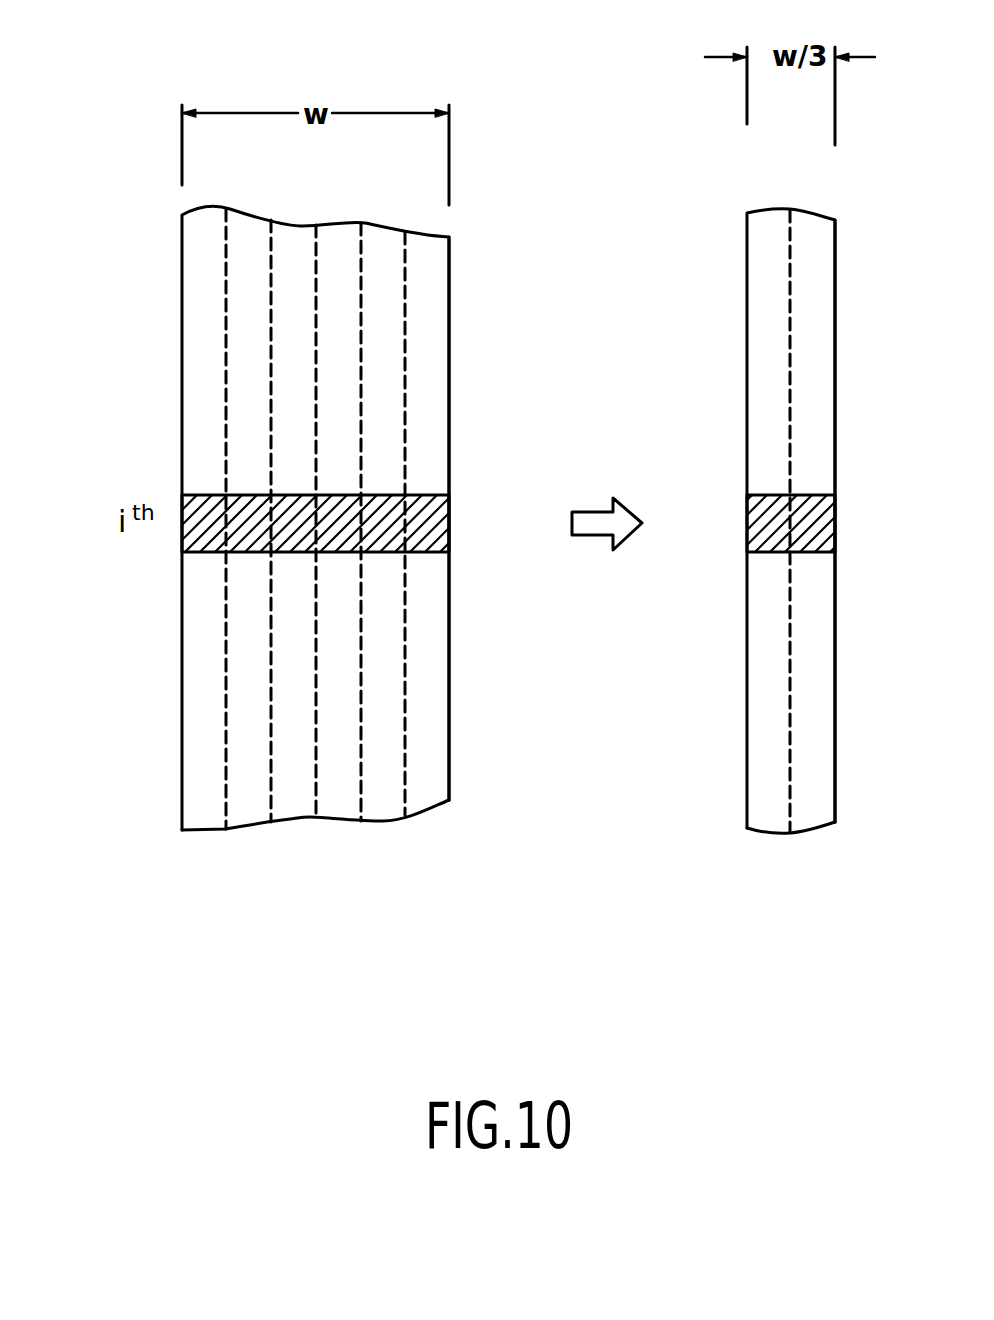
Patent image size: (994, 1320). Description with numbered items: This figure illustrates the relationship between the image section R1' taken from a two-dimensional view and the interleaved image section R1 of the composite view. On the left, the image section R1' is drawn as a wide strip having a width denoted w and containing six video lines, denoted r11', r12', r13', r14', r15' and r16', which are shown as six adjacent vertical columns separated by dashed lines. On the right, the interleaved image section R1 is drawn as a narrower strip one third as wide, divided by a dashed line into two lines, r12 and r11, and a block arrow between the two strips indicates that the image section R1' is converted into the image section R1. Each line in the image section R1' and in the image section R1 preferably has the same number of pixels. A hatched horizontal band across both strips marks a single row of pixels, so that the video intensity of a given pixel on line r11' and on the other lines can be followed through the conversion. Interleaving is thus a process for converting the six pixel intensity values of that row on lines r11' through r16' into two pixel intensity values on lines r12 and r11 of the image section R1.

The image section R1' is at (274, 518).
The video line r11' is at (154, 564).
The video line r12' is at (228, 601).
The video line r13' is at (290, 615).
The video line r14' is at (391, 596).
The video line r15' is at (436, 564).
The video line r16' is at (486, 539).
The interleaved image section R1 is at (791, 489).
The video line r11 is at (797, 596).
The video line r12 is at (720, 562).